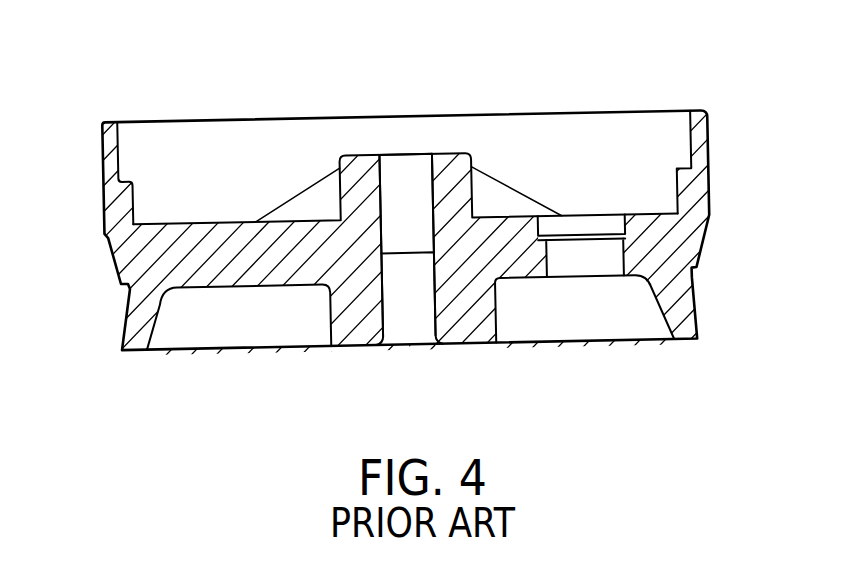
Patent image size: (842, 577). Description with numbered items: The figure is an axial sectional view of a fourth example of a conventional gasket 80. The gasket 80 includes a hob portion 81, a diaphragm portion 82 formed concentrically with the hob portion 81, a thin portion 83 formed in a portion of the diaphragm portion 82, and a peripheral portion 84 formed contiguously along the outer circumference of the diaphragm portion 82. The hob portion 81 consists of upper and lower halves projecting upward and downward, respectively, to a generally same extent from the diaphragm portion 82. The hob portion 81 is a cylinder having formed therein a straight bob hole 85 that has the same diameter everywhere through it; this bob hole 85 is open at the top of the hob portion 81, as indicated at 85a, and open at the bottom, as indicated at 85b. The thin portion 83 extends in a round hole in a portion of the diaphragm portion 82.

The gasket 80 is at (199, 104).
The hob portion 81 is at (473, 333).
The diaphragm portion 82 is at (226, 278).
The thin portion 83 is at (588, 240).
The peripheral portion 84 is at (703, 149).
The bob hole 85 is at (390, 154).
The top opening of bob hole 85a is at (420, 152).
The bottom opening of bob hole 85b is at (397, 343).